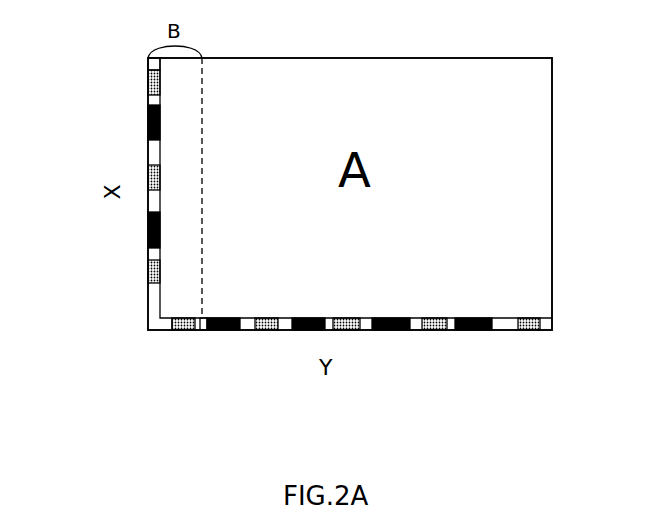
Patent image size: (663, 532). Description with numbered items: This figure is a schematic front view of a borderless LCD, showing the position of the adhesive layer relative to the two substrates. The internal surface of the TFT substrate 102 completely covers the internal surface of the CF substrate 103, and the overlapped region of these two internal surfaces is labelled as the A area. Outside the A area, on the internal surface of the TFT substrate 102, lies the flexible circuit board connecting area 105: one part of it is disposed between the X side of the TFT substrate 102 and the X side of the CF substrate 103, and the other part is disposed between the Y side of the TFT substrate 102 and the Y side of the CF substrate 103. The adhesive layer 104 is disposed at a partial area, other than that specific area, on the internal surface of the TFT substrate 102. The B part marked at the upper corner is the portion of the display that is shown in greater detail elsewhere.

The TFT substrate 102 is at (150, 328).
The CF substrate 103 is at (158, 296).
The adhesive layer 104 is at (148, 84).
The flexible circuit board connecting area 105 is at (467, 330).